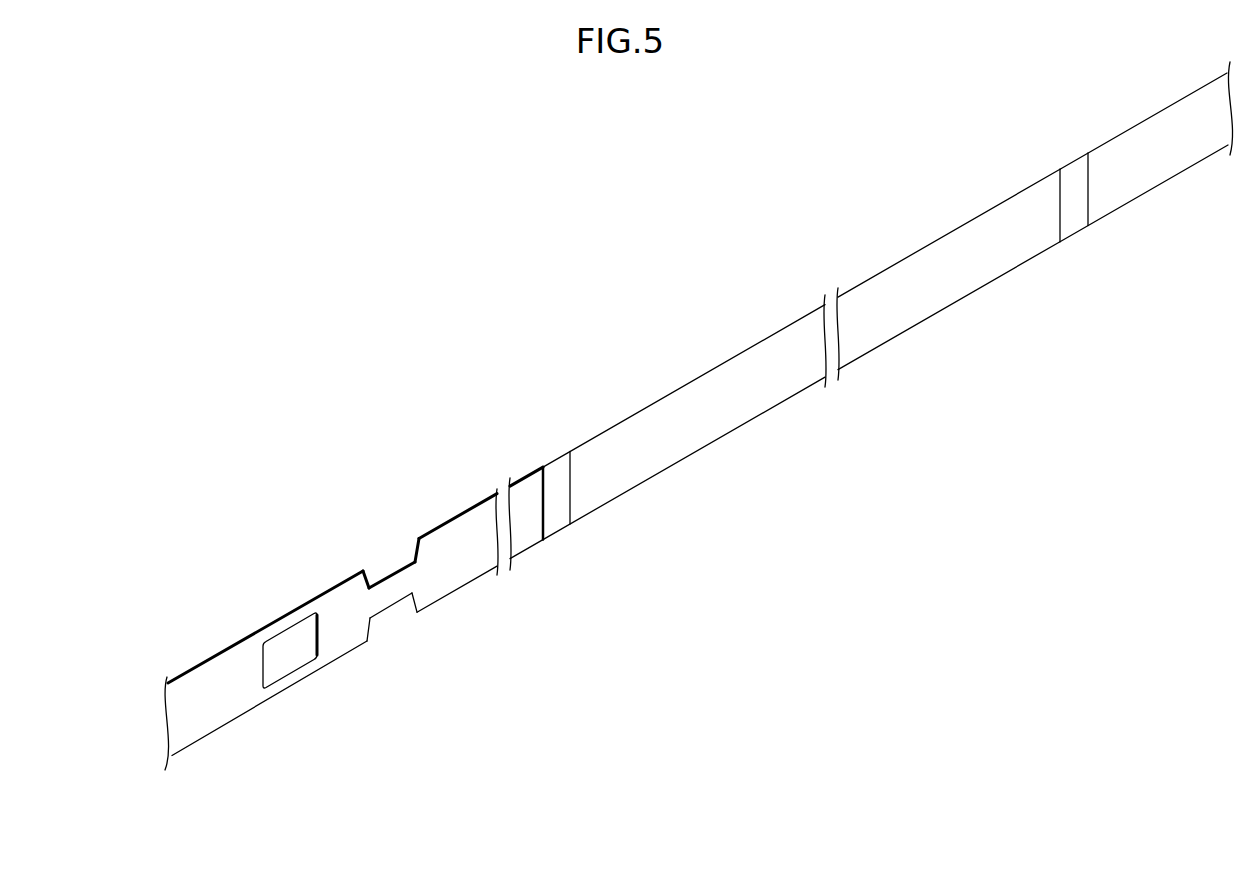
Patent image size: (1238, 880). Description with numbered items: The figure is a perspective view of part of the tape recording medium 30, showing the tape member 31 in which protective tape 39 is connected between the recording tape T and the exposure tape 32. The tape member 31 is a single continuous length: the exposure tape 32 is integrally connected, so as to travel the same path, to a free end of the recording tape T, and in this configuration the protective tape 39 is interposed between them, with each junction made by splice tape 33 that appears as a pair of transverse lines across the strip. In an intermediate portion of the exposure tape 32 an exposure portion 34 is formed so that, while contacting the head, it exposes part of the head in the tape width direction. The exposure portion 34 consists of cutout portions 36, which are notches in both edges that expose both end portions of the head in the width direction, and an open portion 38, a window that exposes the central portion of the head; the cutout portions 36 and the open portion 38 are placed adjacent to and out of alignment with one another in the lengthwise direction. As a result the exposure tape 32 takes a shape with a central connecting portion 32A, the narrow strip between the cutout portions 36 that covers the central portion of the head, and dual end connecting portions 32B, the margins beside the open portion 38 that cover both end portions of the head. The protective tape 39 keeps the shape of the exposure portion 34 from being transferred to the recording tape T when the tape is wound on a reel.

The tape recording medium 30 is at (545, 235).
The tape member 31 is at (532, 548).
The exposure tape 32 is at (455, 550).
The central connecting portion 32A is at (388, 598).
The dual end connecting portions 32B is at (292, 622).
The splice tape 33 is at (560, 497).
The exposure portion 34 is at (355, 628).
The cutout portions 36 is at (392, 572).
The open portion 38 is at (285, 660).
The protective tape 39 is at (790, 350).
The recording tape T is at (1138, 170).